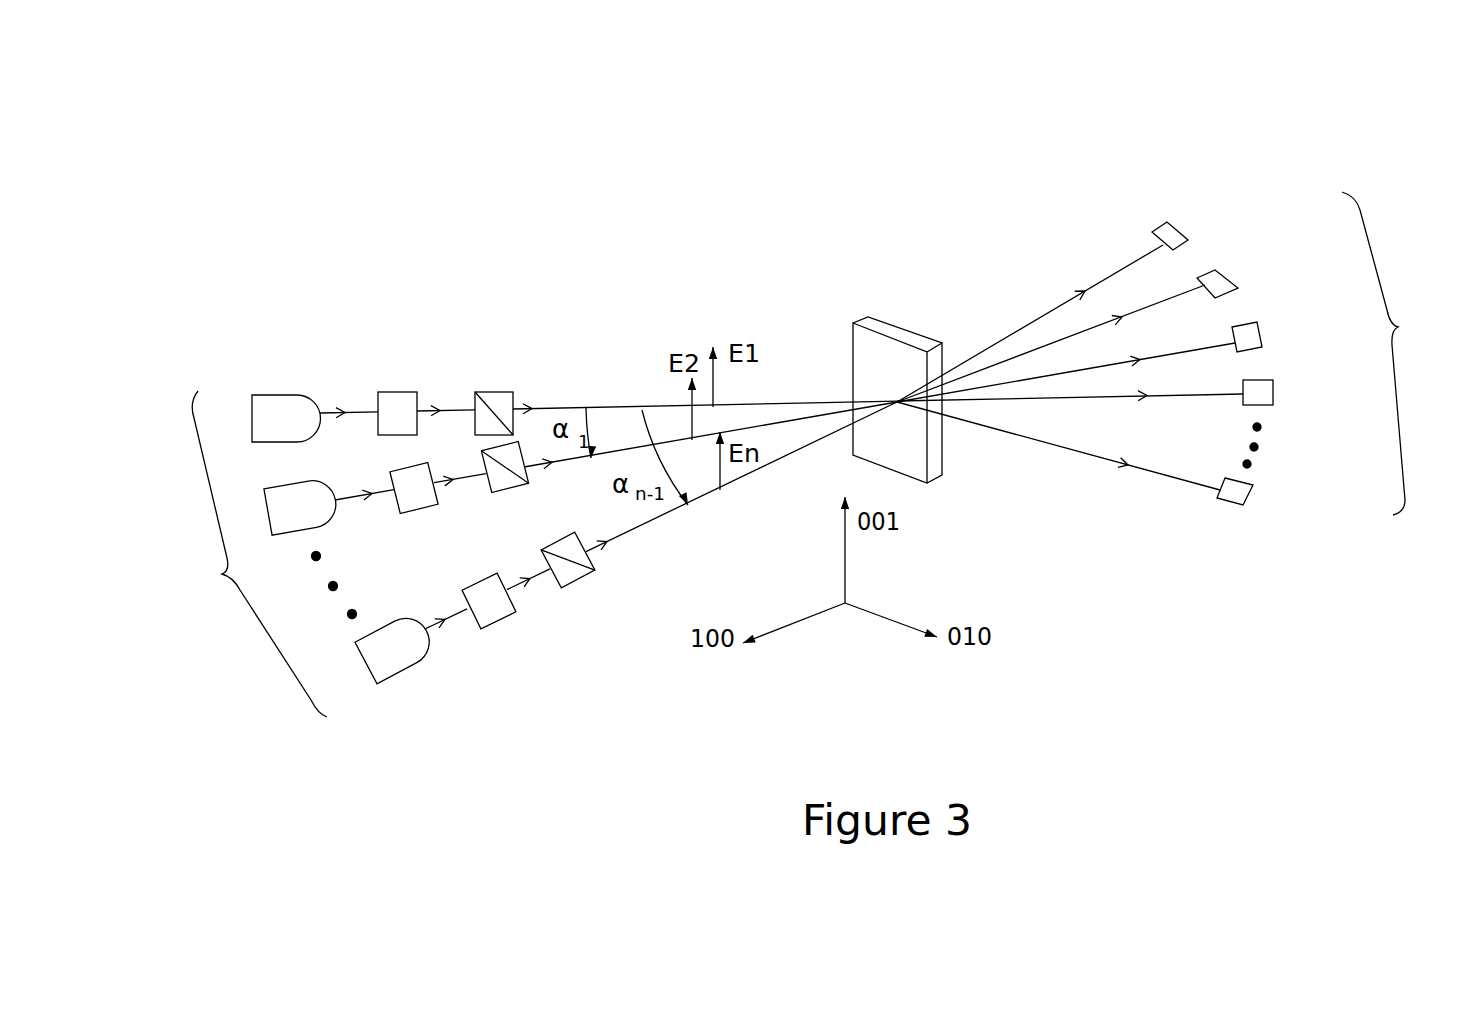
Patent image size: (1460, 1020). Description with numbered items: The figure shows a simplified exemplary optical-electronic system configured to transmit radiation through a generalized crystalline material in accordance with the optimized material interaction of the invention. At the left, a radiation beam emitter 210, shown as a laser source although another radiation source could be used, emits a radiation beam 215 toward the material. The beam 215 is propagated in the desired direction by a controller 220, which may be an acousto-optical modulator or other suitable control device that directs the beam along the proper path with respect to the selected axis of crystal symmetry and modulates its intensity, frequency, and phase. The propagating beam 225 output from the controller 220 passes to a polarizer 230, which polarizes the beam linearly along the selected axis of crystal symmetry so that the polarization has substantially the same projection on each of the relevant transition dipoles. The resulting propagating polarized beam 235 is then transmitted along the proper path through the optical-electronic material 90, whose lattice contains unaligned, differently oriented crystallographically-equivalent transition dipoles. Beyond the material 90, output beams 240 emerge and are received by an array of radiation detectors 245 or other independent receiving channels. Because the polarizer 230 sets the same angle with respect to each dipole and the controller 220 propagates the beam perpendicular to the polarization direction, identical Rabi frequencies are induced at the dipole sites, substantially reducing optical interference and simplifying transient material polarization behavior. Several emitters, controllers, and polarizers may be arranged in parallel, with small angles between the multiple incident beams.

The radiation beam emitter 210 is at (275, 390).
The radiation beam 215 is at (338, 403).
The controller 220 is at (397, 392).
The propagating beam 225 is at (447, 405).
The polarizer 230 is at (488, 388).
The propagating polarized beam 235 is at (596, 407).
The optical-electronic material 90 is at (903, 323).
The output light beams 240 is at (1080, 277).
The detector array 245 is at (1301, 353).